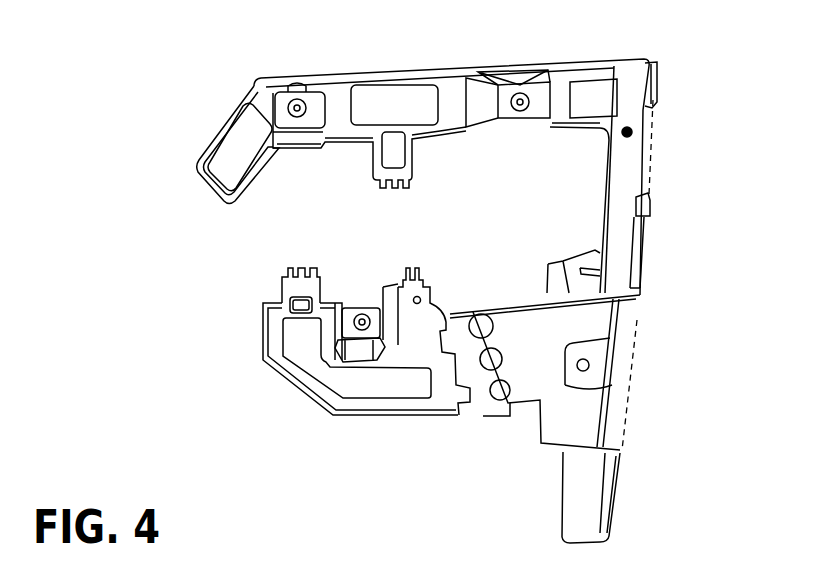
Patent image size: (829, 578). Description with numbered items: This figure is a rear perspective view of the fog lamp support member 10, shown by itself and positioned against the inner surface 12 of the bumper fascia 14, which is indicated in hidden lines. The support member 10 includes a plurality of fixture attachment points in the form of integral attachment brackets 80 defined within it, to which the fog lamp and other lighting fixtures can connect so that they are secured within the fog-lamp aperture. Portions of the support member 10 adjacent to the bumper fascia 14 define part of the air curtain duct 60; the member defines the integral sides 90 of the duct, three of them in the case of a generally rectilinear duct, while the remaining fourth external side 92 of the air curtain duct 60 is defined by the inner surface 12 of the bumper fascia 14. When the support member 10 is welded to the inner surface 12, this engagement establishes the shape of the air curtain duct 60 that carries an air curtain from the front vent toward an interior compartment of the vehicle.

The support member 10 is at (318, 59).
The inner surface 12 is at (633, 357).
The bumper fascia 14 is at (637, 315).
The air curtain duct 60 is at (622, 316).
The integral attachment brackets 80 is at (516, 101).
The integral sides 90 is at (603, 383).
The external side 92 is at (623, 422).